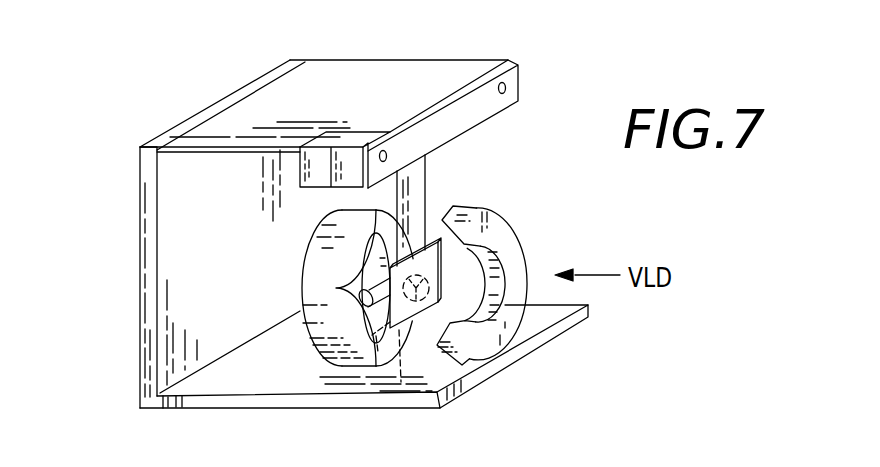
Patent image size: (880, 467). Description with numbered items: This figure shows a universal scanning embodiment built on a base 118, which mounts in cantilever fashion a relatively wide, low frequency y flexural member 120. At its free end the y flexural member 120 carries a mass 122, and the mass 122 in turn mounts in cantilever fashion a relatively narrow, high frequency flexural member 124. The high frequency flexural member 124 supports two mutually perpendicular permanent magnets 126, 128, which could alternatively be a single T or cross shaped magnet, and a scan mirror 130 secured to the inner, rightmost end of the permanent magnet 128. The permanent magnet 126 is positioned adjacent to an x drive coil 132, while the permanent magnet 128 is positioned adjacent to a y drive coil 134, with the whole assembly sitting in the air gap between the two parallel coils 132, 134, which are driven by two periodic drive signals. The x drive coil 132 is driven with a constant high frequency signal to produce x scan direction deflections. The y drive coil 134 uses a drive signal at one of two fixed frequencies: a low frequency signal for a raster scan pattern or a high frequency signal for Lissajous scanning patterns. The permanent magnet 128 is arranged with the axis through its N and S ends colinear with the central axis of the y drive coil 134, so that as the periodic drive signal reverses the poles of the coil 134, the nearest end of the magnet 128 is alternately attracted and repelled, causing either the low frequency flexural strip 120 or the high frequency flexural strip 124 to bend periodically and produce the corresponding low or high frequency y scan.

The base 118 is at (138, 283).
The low frequency y flexural member 120 is at (333, 58).
The mass 122 is at (508, 60).
The high frequency flexural member 124 is at (423, 182).
The permanent magnet 126 is at (360, 302).
The permanent magnet 128 is at (383, 407).
The scan mirror 130 is at (407, 318).
The x drive coil 132 is at (320, 358).
The y drive coil 134 is at (509, 226).